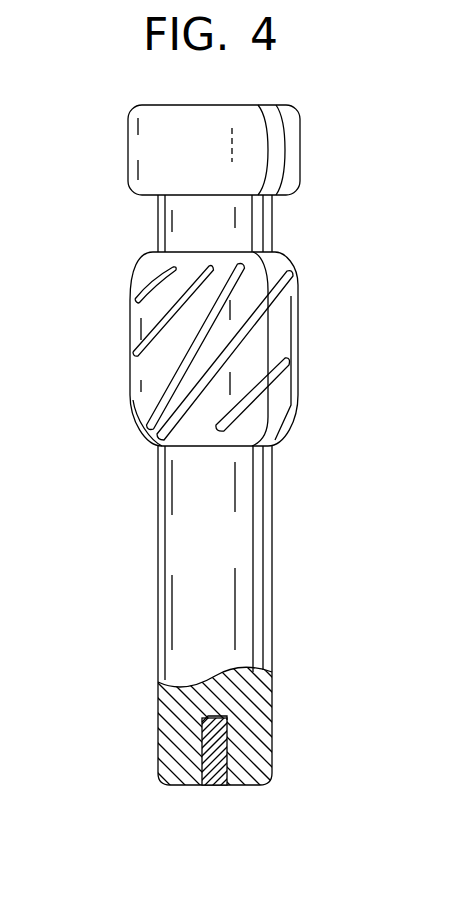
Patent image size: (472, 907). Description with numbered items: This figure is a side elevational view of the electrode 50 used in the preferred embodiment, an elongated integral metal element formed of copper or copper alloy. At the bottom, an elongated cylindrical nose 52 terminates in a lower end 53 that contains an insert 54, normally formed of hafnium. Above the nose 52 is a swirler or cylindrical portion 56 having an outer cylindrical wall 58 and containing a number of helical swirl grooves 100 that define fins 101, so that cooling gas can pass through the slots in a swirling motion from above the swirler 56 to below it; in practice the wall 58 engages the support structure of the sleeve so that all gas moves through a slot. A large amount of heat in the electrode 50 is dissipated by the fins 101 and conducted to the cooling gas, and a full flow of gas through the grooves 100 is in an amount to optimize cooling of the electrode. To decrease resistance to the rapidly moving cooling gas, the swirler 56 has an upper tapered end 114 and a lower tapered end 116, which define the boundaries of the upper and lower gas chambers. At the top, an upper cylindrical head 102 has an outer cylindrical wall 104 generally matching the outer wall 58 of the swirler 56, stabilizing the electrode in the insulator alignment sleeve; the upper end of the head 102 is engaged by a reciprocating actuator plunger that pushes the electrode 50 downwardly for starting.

The electrode 50 is at (227, 461).
The elongated nose 52 is at (260, 580).
The lower end 53 is at (185, 785).
The insert 54 is at (218, 785).
The swirler or cylindrical portion 56 is at (227, 356).
The outer cylindrical wall 58 is at (297, 308).
The helical swirl grooves 100 is at (257, 329).
The fins 101 is at (190, 347).
The upper cylindrical head 102 is at (237, 128).
The outer cylindrical wall 104 is at (300, 148).
The upper tapered end 114 is at (153, 260).
The lower tapered end 116 is at (153, 440).